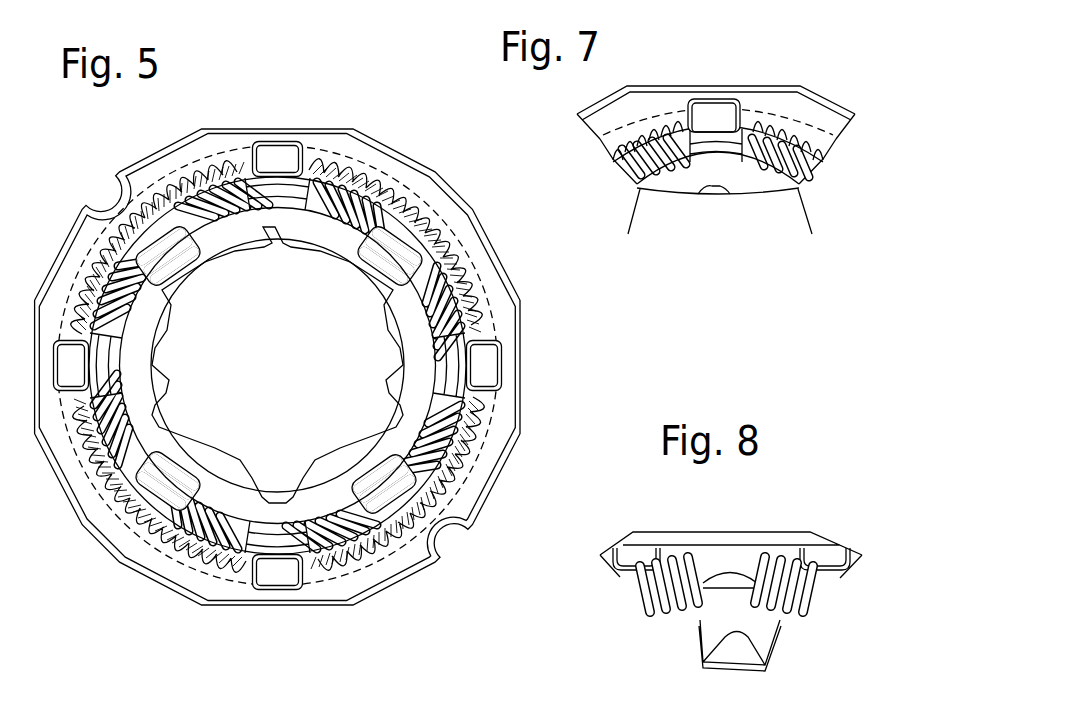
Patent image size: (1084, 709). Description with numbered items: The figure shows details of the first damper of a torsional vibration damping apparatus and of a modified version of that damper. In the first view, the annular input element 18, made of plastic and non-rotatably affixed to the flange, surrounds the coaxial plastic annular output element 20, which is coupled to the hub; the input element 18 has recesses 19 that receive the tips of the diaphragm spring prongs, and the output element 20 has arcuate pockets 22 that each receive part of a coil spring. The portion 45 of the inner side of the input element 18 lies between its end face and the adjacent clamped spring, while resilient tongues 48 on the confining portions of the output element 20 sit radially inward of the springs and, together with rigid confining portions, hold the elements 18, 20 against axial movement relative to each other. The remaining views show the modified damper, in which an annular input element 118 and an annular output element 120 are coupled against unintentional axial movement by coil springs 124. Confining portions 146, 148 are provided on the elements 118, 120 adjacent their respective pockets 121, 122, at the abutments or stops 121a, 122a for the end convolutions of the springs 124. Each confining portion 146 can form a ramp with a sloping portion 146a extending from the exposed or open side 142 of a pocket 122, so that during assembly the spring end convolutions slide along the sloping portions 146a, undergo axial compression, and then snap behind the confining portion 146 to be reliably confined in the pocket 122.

In FIG. 5, the annular input element 18 is at (498, 291).
In FIG. 5, the recesses 19 is at (483, 350).
In FIG. 5, the annular output element 20 is at (417, 360).
In FIG. 5, the arcuate pocket 22 is at (363, 233).
In FIG. 5, the portion of the inner side of the input element 45 is at (433, 205).
In FIG. 5, the resilient tongues 48 is at (160, 467).
In FIG. 7, the annular input element 118 is at (663, 96).
In FIG. 8, the annular input element 118 is at (635, 575).
In FIG. 7, the annular output element 120 is at (670, 188).
In FIG. 8, the annular output element 120 is at (770, 645).
In FIG. 8, the pockets 121 is at (810, 552).
In FIG. 8, the abutments or stops 121a is at (713, 567).
In FIG. 7, the pockets 122 is at (636, 186).
In FIG. 7, the abutments or stops 122a is at (718, 144).
In FIG. 8, the abutments or stops 122a is at (718, 600).
In FIG. 7, the coil springs 124 is at (793, 190).
In FIG. 8, the coil springs 124 is at (805, 610).
In FIG. 7, the exposed or open side 142 is at (733, 190).
In FIG. 7, the confining portions 146 is at (738, 180).
In FIG. 7, the sloping portion 146a is at (745, 187).
In FIG. 8, the confining portions 148 is at (763, 560).